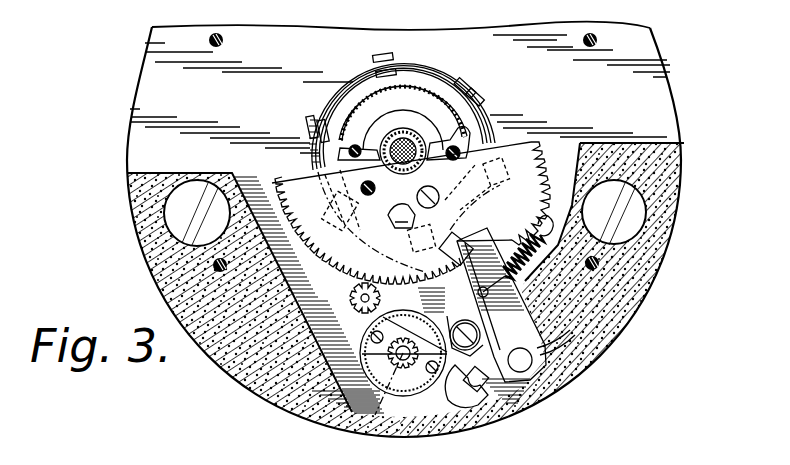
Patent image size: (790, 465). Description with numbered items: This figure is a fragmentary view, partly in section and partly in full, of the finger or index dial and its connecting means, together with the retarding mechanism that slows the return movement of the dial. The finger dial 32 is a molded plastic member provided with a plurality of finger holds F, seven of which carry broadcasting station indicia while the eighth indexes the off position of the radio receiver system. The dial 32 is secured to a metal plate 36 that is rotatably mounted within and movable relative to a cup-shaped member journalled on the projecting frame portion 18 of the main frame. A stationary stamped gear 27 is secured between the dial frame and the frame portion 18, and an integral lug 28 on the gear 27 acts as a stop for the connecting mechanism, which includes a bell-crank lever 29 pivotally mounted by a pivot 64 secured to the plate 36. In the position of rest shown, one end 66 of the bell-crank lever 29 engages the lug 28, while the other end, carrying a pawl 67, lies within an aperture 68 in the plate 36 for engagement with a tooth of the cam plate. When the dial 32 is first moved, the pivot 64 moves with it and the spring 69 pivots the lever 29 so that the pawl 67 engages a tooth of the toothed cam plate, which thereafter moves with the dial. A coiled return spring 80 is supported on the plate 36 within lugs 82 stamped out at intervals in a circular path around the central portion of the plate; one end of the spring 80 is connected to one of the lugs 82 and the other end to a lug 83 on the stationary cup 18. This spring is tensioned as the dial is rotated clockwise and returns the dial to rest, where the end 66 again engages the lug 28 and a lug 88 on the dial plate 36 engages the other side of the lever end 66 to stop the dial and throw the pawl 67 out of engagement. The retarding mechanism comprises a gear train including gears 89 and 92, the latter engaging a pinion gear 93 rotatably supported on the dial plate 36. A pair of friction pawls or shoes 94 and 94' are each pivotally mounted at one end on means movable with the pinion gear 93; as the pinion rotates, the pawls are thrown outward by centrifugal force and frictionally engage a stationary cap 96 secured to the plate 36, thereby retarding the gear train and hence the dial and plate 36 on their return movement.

The frame portion 18 is at (460, 124).
The stationary stamped gear 27 is at (298, 193).
The integral lug 28 is at (503, 193).
The bell-crank lever 29 is at (510, 331).
The finger dial 32 is at (652, 248).
The metal plate 36 is at (184, 128).
The pivot 64 is at (547, 380).
The end of bell-crank lever 66 is at (441, 210).
The pawl 67 is at (506, 420).
The aperture 68 is at (458, 400).
The spring 69 is at (533, 220).
The coiled spring 80 is at (435, 70).
The lugs 82 is at (312, 122).
The lug 83 is at (390, 223).
The lug 88 is at (368, 244).
The gear 89 is at (355, 307).
The gear 92 is at (318, 287).
The pinion gear 93 is at (386, 425).
The friction pawl 94 is at (377, 401).
The friction pawl 94' is at (365, 394).
The stationary cap 96 is at (417, 310).
The finger holds F is at (160, 228).